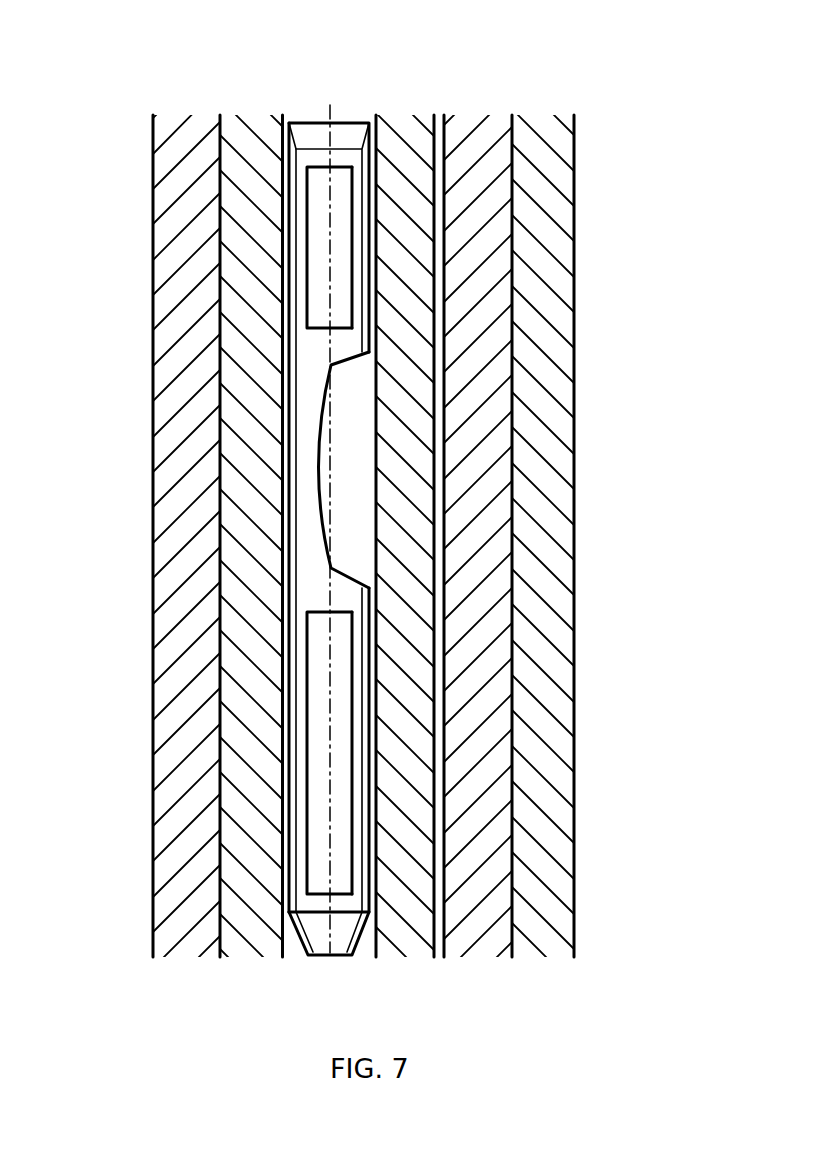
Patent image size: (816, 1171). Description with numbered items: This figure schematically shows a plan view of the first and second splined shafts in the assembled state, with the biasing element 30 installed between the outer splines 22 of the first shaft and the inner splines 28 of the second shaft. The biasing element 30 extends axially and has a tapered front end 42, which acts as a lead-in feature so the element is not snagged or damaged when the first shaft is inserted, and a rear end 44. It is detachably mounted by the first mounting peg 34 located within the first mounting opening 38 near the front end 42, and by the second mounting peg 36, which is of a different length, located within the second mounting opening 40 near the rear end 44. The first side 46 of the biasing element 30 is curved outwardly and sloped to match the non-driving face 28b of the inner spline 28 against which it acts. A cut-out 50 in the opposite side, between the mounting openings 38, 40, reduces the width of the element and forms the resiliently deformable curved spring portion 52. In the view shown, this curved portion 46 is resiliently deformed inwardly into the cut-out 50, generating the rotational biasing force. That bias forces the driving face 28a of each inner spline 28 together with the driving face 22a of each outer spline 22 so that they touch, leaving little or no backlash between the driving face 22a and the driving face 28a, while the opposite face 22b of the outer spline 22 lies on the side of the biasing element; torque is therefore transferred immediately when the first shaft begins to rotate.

The outer spline 22 is at (170, 134).
The driving face of outer spline 22a is at (255, 145).
The second tubular surface 22b is at (153, 236).
The inner spline 28 is at (224, 157).
The driving face of inner spline 28a is at (232, 130).
The non-driving face of inner spline 28b is at (278, 142).
The biasing element 30 is at (315, 355).
The first mounting peg 34 is at (335, 800).
The second mounting peg 36 is at (337, 222).
The first mounting opening 38 is at (352, 850).
The second mounting opening 40 is at (352, 300).
The front end 42 is at (357, 945).
The rear end 44 is at (330, 122).
The first side 46 is at (288, 500).
The cut-out 50 is at (358, 497).
The curved spring portion 52 is at (308, 452).